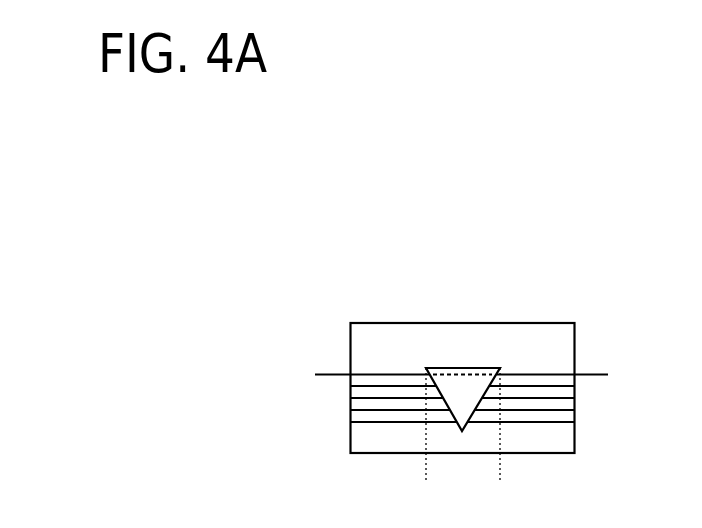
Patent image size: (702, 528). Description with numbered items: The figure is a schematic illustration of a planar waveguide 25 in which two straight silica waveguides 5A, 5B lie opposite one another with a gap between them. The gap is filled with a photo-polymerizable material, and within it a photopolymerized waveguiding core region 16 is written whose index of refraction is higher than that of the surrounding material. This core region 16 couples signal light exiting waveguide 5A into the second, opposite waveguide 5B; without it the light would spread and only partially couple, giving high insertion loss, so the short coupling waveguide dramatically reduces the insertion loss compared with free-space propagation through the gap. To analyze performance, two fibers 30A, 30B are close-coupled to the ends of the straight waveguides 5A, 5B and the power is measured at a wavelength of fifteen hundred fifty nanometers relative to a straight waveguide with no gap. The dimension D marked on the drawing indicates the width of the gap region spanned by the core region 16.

The planar waveguide 25 is at (379, 207).
The waveguide 5A is at (403, 373).
The waveguide 5B is at (523, 373).
The waveguide core region 16 is at (462, 375).
The fiber 30A is at (332, 374).
The fiber 30B is at (593, 374).
The groove width dimension D is at (500, 463).